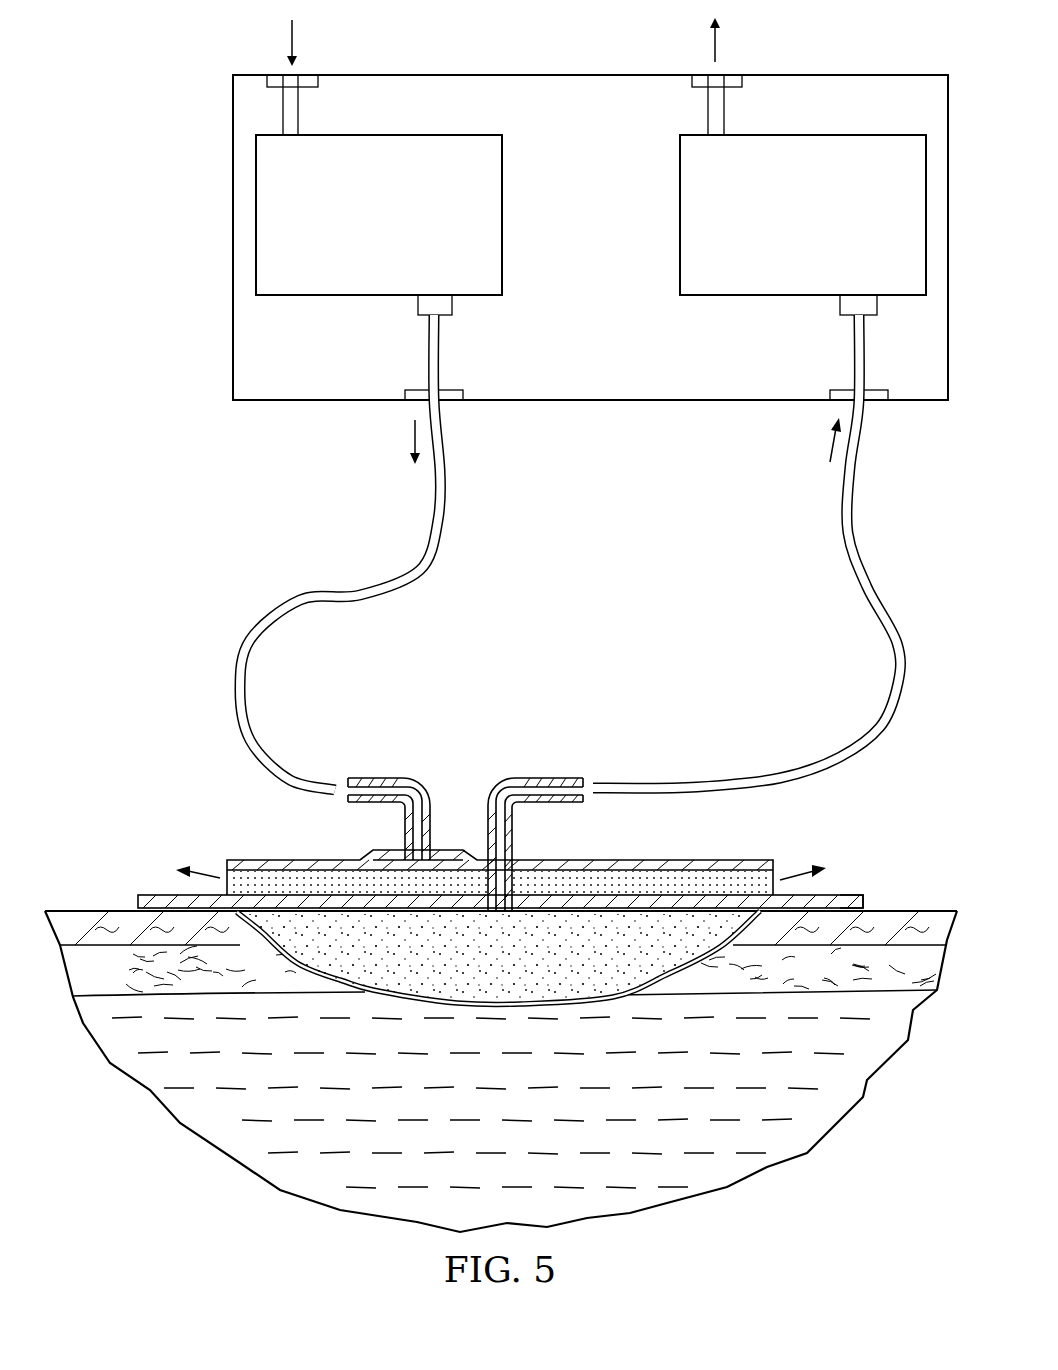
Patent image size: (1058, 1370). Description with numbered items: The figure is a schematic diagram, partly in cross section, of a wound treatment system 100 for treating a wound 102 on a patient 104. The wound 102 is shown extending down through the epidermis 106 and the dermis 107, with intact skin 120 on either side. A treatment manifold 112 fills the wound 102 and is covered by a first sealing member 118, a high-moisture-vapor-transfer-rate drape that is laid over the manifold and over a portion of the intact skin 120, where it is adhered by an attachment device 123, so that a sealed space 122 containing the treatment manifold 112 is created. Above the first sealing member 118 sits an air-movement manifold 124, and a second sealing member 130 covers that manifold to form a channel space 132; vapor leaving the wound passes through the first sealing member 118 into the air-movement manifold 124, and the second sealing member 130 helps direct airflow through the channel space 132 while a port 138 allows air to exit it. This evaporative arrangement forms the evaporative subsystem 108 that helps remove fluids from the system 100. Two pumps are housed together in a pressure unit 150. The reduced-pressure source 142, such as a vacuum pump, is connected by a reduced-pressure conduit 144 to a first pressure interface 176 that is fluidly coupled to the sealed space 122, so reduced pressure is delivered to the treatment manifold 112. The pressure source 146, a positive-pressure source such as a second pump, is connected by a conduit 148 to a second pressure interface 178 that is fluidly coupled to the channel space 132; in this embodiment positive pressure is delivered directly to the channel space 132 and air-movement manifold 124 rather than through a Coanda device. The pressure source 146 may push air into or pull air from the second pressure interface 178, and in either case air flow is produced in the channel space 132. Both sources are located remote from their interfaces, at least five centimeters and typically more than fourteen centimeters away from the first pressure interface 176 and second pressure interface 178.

The wound treatment system 100 is at (172, 758).
The wound 102 is at (612, 1001).
The patient 104 is at (866, 1095).
The epidermis 106 is at (55, 912).
The dermis 107 is at (948, 988).
The evaporative subsystem 108 is at (466, 848).
The treatment manifold 112 is at (514, 965).
The first sealing member 118 is at (837, 897).
The intact skin 120 is at (107, 906).
The sealed space 122 is at (757, 923).
The attachment device 123 is at (866, 905).
The air-movement manifold 124 is at (668, 880).
The second sealing member 130 is at (258, 862).
The channel space 132 is at (312, 880).
The port 138 is at (227, 860).
The reduced-pressure source 142 is at (680, 240).
The reduced-pressure conduit 144 is at (854, 505).
The pressure source 146 is at (502, 185).
The conduit 148 is at (433, 507).
The pressure unit 150 is at (846, 75).
The first pressure interface 176 is at (550, 778).
The second pressure interface 178 is at (372, 778).